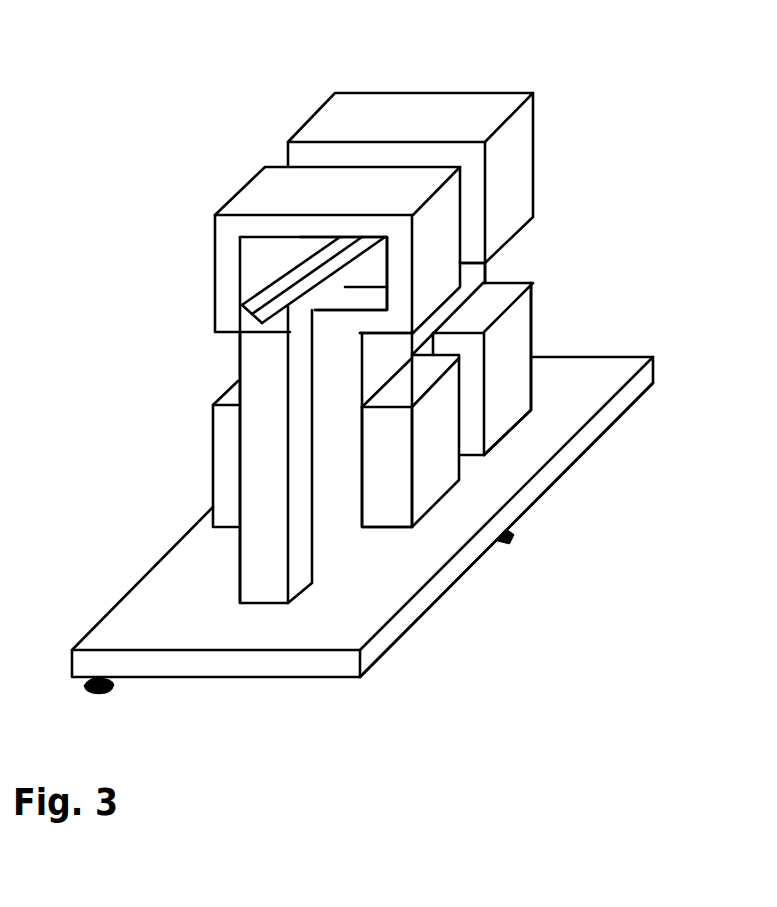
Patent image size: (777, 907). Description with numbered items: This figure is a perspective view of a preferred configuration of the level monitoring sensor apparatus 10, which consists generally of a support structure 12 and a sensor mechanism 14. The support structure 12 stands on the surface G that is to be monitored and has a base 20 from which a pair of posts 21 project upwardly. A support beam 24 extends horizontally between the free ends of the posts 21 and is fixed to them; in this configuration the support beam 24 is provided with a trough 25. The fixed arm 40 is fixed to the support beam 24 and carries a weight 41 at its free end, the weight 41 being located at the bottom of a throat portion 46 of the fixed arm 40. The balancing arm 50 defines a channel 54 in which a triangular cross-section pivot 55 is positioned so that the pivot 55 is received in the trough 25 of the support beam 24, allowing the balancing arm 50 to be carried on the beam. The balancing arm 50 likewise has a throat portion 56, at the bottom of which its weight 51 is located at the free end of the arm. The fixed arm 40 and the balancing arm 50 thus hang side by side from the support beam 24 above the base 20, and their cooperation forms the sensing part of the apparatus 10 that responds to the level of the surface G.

The level monitoring sensor apparatus 10 is at (160, 207).
The support structure 12 is at (210, 557).
The sensor mechanism 14 is at (433, 237).
The base 20 is at (320, 665).
The posts 21 is at (273, 537).
The support beam 24 is at (238, 332).
The trough 25 is at (276, 290).
The fixed arm 40 is at (507, 358).
The weight 41 is at (518, 410).
The throat portion 46 is at (470, 278).
The balancing arm 50 is at (428, 467).
The weight 51 is at (447, 447).
The channel 54 is at (248, 267).
The pivot 55 is at (315, 247).
The throat portion 56 is at (371, 363).
The surface G is at (607, 541).